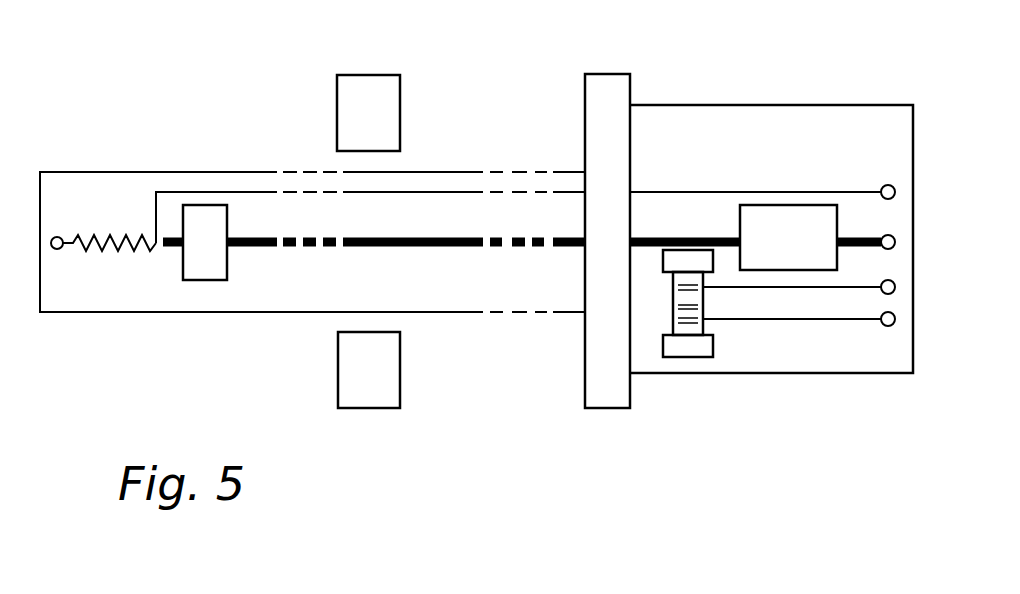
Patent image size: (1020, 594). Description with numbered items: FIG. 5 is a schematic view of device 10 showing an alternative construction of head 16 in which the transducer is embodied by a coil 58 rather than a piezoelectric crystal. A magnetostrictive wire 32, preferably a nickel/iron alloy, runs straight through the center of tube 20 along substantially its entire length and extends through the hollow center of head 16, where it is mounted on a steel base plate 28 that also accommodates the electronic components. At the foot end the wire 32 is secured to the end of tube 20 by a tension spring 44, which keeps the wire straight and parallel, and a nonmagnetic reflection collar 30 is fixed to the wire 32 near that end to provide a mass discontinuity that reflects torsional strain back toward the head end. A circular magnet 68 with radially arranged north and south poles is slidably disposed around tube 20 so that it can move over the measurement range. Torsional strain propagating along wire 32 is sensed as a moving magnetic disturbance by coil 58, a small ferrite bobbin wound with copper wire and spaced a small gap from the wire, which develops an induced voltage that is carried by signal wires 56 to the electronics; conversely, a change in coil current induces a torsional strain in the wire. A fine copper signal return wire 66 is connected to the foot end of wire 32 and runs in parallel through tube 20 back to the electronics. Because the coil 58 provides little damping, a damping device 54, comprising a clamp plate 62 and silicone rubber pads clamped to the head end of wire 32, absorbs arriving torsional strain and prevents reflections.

The device 10 is at (268, 133).
The head 16 is at (915, 52).
The tube 20 is at (176, 141).
The steel base plate 28 is at (842, 343).
The reflection collar 30 is at (202, 238).
The magnetostrictive wire 32 is at (431, 214).
The tension spring 44 is at (84, 243).
The damping device 54 is at (740, 214).
The signal wires 56 is at (883, 281).
The coil 58 is at (673, 302).
The clamp plate 62 is at (788, 237).
The signal return wire 66 is at (180, 192).
The circular magnet 68 is at (397, 46).